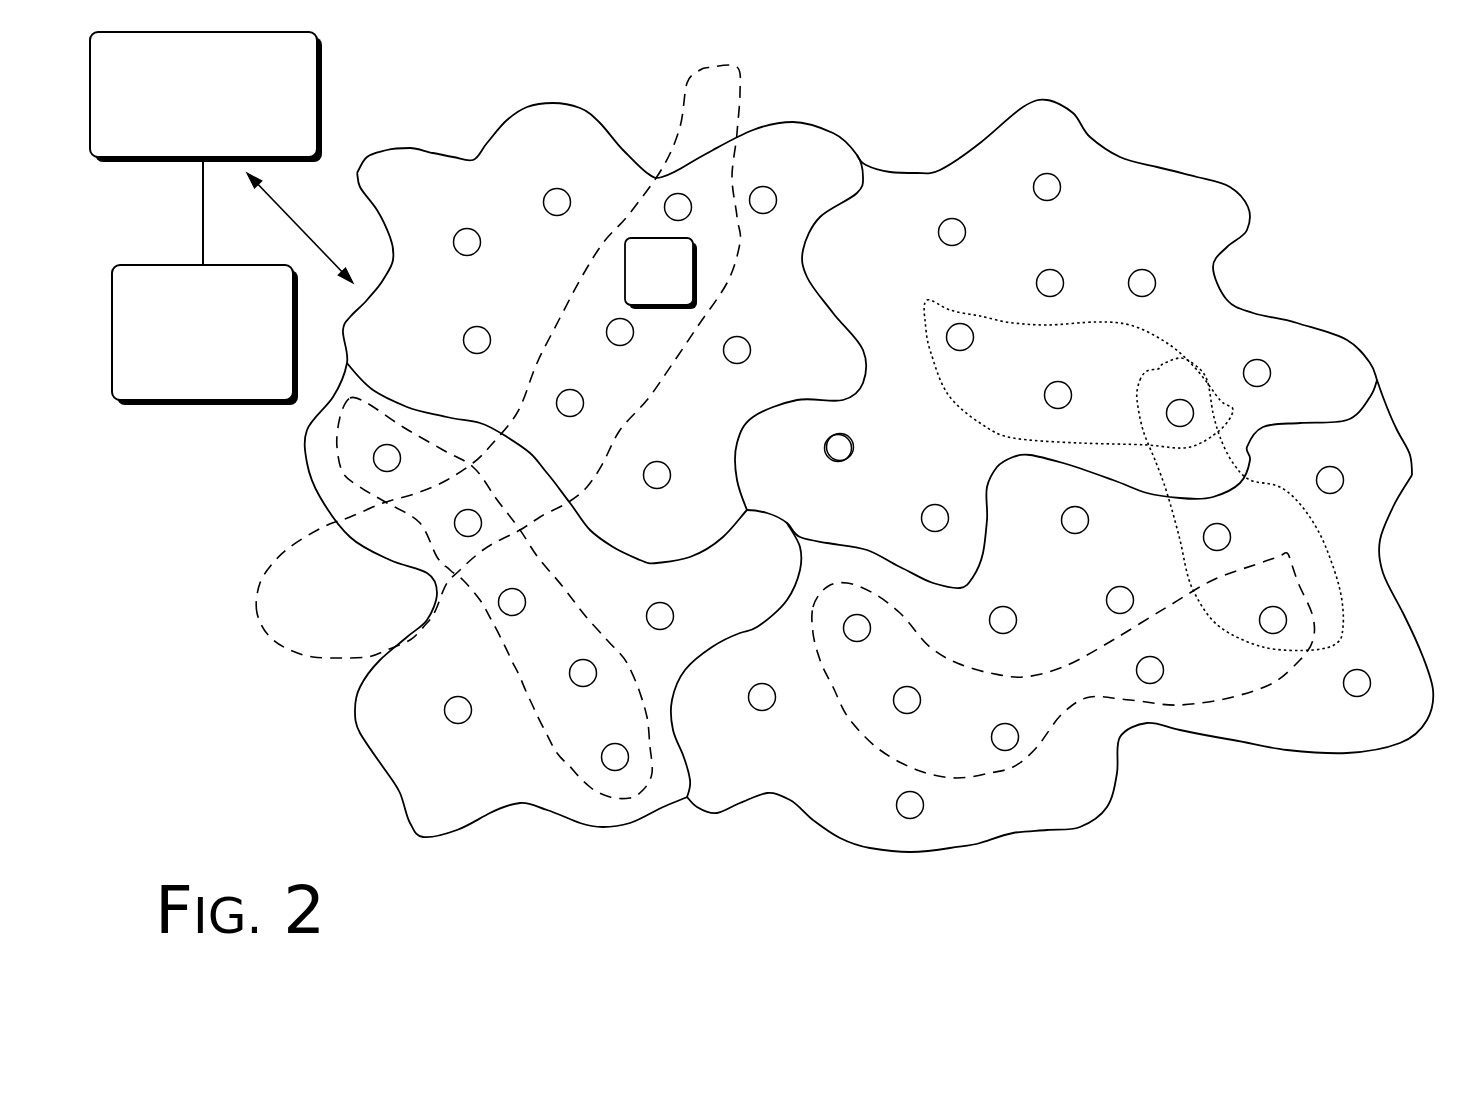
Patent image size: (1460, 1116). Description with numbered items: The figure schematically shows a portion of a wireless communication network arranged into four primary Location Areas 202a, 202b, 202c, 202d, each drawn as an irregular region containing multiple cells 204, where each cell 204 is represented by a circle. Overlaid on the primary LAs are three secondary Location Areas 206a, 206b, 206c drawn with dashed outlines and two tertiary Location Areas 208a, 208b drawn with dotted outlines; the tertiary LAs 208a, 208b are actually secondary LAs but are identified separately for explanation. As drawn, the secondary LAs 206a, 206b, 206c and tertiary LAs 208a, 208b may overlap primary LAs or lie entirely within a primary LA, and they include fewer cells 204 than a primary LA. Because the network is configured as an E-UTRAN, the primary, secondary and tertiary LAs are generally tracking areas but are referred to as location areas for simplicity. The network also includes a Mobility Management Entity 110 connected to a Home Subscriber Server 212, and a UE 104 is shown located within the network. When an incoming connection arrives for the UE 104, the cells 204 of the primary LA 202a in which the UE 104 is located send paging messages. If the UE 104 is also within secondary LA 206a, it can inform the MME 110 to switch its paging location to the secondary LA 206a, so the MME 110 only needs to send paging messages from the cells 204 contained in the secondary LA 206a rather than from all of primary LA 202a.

The MME 110 is at (186, 149).
The Home Subscriber Server (HSS) 212 is at (186, 388).
The UE 104 is at (643, 299).
The cell 204 is at (458, 230).
The primary Location Area 202a is at (593, 154).
The primary Location Area 202b is at (1202, 218).
The primary Location Area 202c is at (840, 781).
The primary Location Area 202d is at (498, 794).
The secondary Location Area 206a is at (267, 570).
The secondary Location Area 206b is at (1235, 693).
The secondary Location Area 206c is at (642, 790).
The tertiary Location Area 208a is at (1322, 640).
The tertiary Location Area 208b is at (1233, 410).